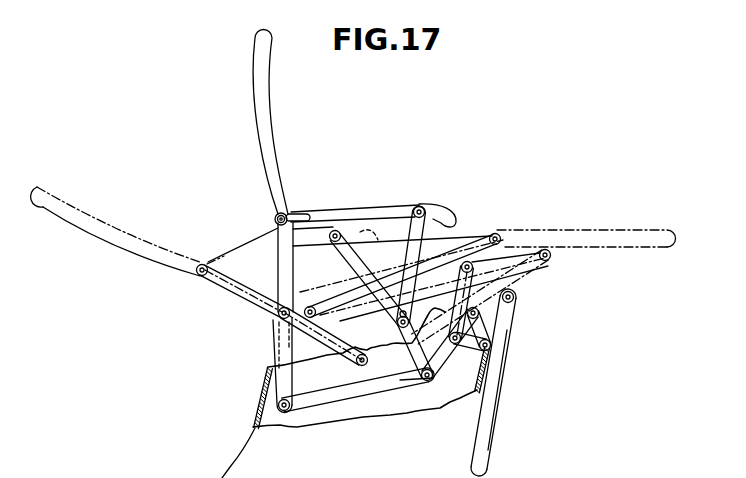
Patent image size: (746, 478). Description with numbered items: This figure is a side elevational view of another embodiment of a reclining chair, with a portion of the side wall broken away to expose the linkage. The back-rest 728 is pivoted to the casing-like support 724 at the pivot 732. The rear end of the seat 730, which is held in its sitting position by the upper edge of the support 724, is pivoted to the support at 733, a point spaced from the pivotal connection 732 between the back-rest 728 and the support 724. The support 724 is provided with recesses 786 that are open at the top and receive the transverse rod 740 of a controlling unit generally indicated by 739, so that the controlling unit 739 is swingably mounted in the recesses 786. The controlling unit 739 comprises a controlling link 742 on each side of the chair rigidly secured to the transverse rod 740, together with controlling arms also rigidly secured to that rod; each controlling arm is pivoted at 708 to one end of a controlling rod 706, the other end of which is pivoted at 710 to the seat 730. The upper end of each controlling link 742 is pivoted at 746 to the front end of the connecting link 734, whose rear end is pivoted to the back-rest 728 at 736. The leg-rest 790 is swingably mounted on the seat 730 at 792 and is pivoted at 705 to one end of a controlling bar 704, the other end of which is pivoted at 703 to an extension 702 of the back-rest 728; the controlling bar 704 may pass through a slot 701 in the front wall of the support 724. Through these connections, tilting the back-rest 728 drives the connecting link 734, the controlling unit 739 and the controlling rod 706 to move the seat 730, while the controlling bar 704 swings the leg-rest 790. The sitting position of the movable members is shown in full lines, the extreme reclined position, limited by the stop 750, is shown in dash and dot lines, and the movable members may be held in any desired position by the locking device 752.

The back-rest 728 is at (270, 130).
The pivot 736 is at (287, 212).
The locking device 752 is at (305, 216).
The connecting link 734 is at (356, 210).
The pivot 746 is at (437, 190).
The controlling unit 739 is at (423, 248).
The controlling link 742 is at (412, 246).
The transverse rod 740 is at (418, 318).
The pivot 792 is at (514, 296).
The pivot 710 is at (518, 309).
The pivot 705 is at (493, 342).
The slot 701 is at (488, 363).
The leg-rest 790 is at (498, 403).
The controlling rod 706 is at (470, 356).
The pivot 708 is at (439, 381).
The recesses 786 is at (392, 320).
The seat 730 is at (353, 306).
The pivot 733 is at (320, 307).
The stop 750 is at (262, 312).
The pivot 732 is at (272, 323).
The extension 702 is at (280, 375).
The support 724 is at (263, 390).
The pivot 703 is at (256, 416).
The controlling bar 704 is at (348, 392).